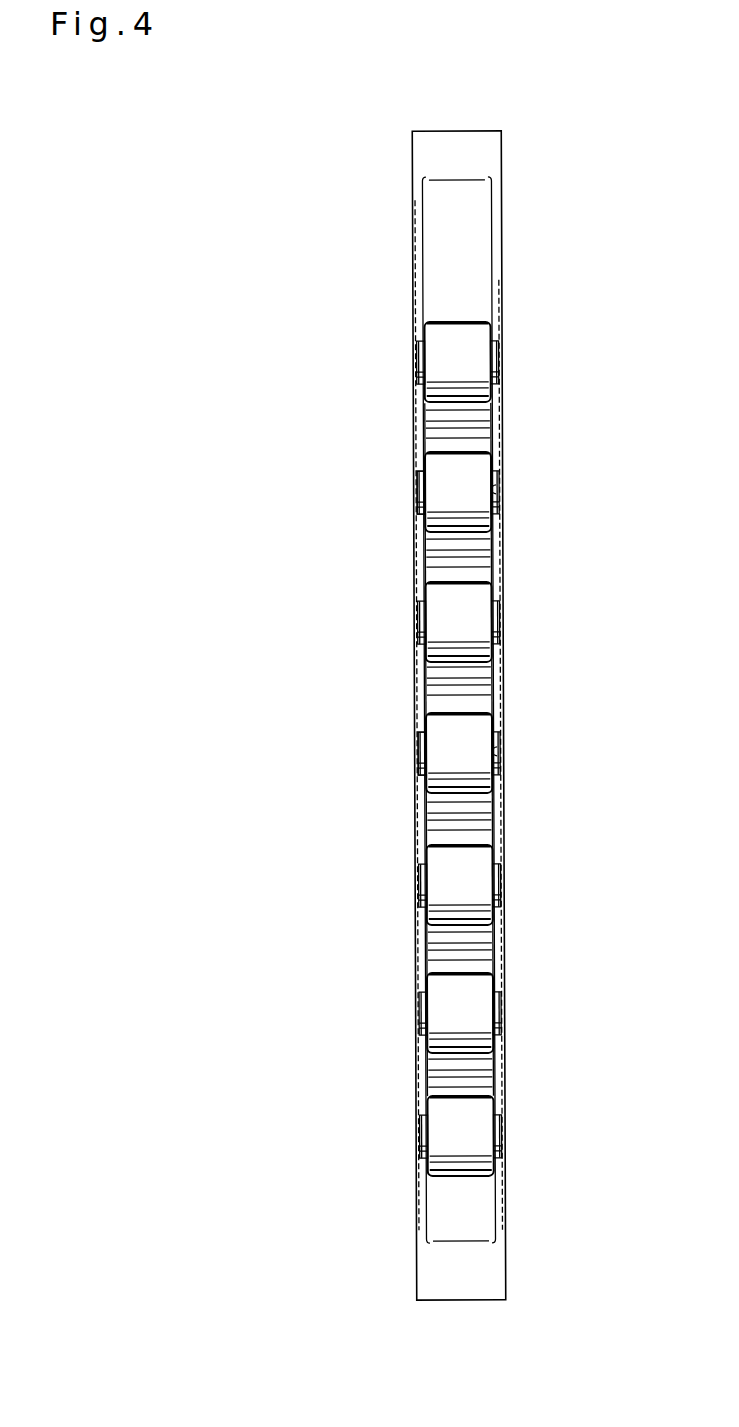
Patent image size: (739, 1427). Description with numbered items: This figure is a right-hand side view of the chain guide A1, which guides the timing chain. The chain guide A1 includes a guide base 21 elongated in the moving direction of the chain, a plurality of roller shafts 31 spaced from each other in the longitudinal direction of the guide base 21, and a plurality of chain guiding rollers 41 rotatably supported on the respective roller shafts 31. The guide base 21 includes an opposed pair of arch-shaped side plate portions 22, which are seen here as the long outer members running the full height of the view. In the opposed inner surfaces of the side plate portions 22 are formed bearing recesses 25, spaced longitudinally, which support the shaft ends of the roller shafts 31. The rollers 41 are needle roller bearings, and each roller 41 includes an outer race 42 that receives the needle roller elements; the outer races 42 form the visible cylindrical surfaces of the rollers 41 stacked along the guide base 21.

The chain guide A1 is at (410, 250).
The guide base 21 is at (415, 425).
The side plate portions 22 is at (498, 818).
The chain guiding rollers 41 is at (458, 450).
The outer race 42 is at (443, 507).
The roller shafts 31 is at (420, 493).
The bearing recesses 25 is at (498, 498).